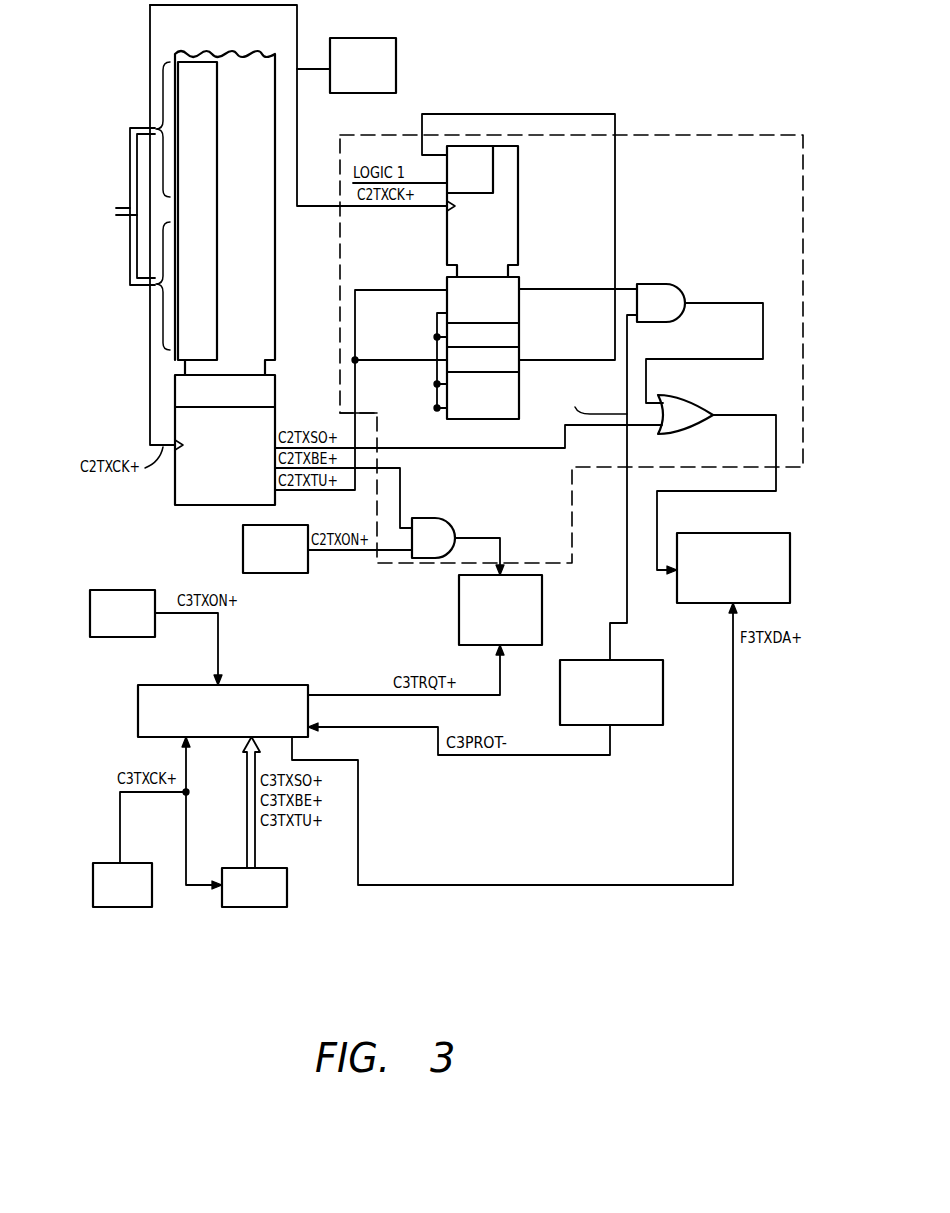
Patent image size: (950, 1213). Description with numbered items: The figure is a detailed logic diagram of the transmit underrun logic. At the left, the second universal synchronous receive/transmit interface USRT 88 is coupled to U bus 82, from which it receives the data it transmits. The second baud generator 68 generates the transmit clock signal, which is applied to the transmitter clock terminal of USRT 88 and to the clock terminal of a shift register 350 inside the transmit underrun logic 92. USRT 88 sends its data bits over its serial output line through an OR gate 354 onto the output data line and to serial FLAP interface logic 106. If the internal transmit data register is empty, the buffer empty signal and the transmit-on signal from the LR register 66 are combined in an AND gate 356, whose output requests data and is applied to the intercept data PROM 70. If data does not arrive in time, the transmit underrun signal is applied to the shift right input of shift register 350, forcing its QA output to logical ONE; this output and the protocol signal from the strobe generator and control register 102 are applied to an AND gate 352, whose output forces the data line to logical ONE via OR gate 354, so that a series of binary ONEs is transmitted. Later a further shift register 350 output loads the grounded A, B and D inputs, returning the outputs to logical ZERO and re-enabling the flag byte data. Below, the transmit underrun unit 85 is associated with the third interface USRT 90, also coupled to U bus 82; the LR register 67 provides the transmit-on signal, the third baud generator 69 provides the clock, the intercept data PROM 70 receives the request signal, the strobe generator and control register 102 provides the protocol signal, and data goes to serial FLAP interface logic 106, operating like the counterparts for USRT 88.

The U bus 82 is at (105, 235).
The USRT-2 88 is at (237, 53).
The baud generator-2 68 is at (396, 58).
The transmit underrun unit 92 is at (687, 133).
The shift register 350 is at (520, 207).
The AND gate 352 is at (666, 283).
The OR gate 354 is at (690, 396).
The AND gate 356 is at (433, 518).
The LR2-2 register 66 is at (243, 549).
The LR2-3 register 67 is at (100, 590).
The transmit underrun unit 85 is at (270, 685).
The intercept data PROM 70 is at (459, 611).
The strobe generator and control register 102 is at (663, 702).
The serial FLAP interface logic 106 is at (711, 604).
The baud generator-3 69 is at (122, 907).
The USRT-3 90 is at (265, 907).